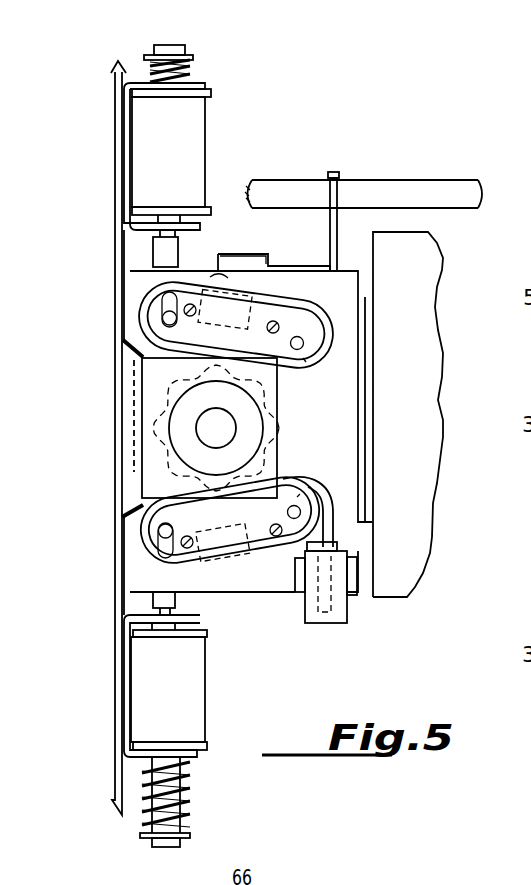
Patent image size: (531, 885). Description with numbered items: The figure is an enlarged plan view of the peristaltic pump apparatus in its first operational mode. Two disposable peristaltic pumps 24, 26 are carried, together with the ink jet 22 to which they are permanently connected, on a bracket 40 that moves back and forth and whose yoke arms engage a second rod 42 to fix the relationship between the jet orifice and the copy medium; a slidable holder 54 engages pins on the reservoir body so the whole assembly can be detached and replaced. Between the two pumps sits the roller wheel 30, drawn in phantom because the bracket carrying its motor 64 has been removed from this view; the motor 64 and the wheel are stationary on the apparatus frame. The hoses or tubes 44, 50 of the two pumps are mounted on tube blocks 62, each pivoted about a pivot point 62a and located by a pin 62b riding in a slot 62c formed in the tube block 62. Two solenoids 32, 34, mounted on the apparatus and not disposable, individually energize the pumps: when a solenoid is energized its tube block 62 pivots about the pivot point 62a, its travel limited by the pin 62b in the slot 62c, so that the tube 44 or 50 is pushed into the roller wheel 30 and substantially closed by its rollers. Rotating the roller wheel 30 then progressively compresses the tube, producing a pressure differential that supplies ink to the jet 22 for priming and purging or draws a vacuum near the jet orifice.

The ink jet 22 is at (337, 626).
The peristaltic pump 24 is at (259, 540).
The peristaltic pump 26 is at (263, 313).
The roller wheel 30 is at (283, 428).
The solenoid 32 is at (178, 690).
The solenoid 34 is at (183, 160).
The bracket 40 is at (338, 178).
The second rod 42 is at (377, 190).
The tube 44 is at (328, 490).
The tube 50 is at (330, 318).
The slidable holder 54 is at (247, 255).
The tube block 62 is at (303, 358).
The pivot point 62a is at (304, 343).
The pin 62b is at (161, 318).
The slot 62c is at (163, 295).
The motor 64 is at (172, 337).